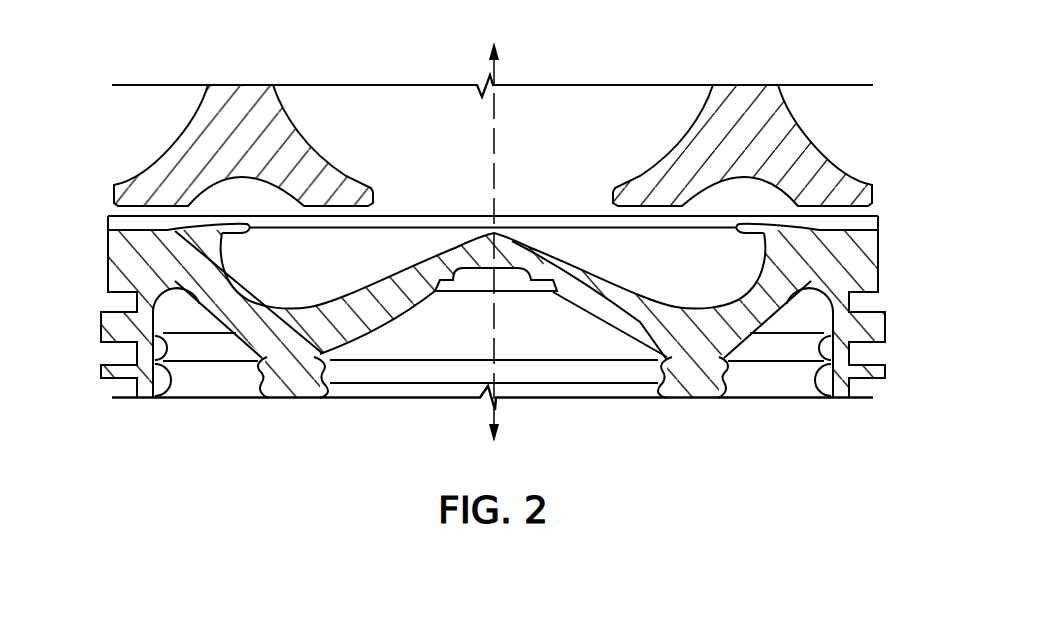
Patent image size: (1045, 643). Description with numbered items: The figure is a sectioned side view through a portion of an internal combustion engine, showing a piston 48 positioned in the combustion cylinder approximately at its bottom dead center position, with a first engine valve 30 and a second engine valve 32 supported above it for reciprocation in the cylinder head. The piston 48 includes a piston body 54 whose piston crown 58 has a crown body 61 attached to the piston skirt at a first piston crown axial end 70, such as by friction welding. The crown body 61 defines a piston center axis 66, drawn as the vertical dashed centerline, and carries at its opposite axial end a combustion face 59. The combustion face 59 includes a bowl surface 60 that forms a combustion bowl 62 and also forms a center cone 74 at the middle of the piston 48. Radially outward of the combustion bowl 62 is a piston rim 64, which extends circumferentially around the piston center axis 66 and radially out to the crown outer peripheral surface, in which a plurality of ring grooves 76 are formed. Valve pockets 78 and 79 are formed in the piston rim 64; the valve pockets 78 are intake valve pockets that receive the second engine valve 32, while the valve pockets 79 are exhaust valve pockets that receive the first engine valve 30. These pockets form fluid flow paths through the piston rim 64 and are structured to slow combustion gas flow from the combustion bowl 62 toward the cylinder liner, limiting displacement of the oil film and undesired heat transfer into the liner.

The first engine valve 30 is at (746, 96).
The second engine valve 32 is at (242, 96).
The piston 48 is at (905, 262).
The piston body 54 is at (880, 228).
The piston crown 58 is at (106, 266).
The combustion face 59 is at (581, 264).
The bowl surface 60 is at (377, 284).
The crown body 61 is at (106, 284).
The combustion bowl 62 is at (287, 282).
The piston rim 64 is at (587, 214).
The piston center axis 66 is at (498, 112).
The first piston crown axial end 70 is at (82, 397).
The center cone 74 is at (505, 236).
The ring grooves 76 is at (882, 305).
The valve pockets 78 is at (110, 216).
The valve pockets 79 is at (874, 219).